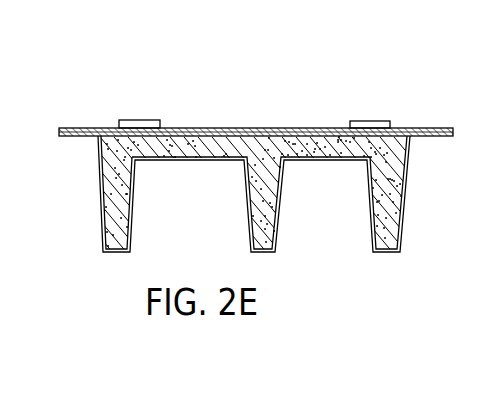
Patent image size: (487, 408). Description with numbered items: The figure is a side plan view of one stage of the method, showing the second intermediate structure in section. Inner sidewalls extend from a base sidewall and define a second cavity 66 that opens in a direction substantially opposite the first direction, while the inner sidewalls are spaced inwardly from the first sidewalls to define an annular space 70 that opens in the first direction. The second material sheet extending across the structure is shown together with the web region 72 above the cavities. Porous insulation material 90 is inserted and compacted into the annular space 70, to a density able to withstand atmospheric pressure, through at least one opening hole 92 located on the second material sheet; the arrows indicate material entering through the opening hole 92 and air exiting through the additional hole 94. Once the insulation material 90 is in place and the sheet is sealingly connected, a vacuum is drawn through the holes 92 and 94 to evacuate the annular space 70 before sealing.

The second cavity 66 is at (265, 223).
The annular space 70 is at (112, 222).
The base plate / web portion 72 is at (327, 145).
The porous insulation material 90 is at (386, 183).
The opening hole 92 is at (140, 114).
The additional hole 94 is at (370, 120).